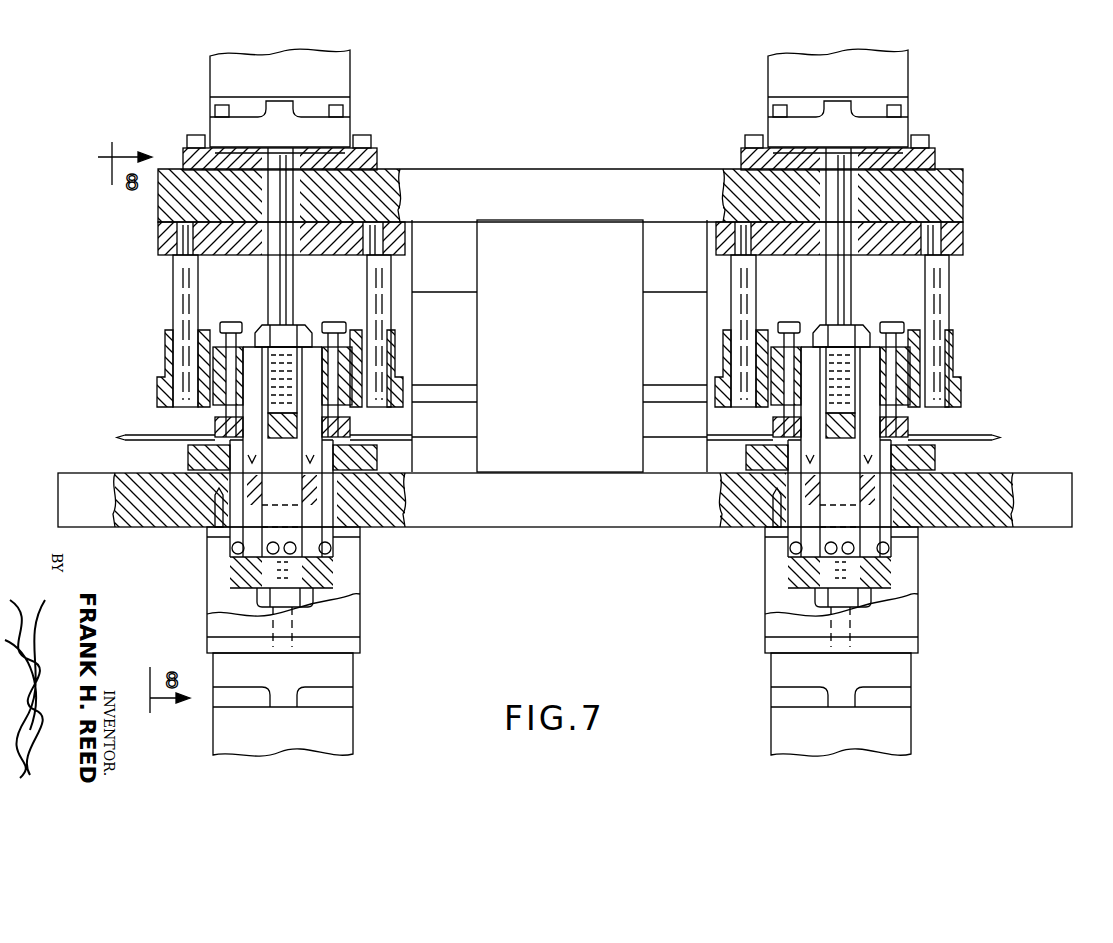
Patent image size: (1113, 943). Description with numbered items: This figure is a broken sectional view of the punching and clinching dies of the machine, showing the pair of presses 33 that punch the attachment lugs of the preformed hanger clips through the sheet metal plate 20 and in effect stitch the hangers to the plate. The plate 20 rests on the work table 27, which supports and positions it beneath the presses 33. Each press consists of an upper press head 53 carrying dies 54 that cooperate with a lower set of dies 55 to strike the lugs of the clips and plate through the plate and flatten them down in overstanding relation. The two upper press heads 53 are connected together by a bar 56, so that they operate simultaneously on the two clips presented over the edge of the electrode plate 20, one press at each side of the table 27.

The bar 56 is at (527, 177).
The upper press head 53 is at (158, 246).
The press 33 is at (150, 356).
The sheet metal plate 20 is at (128, 432).
The dies 54 is at (253, 447).
The lower set of dies 55 is at (265, 467).
The work table 27 is at (1035, 527).